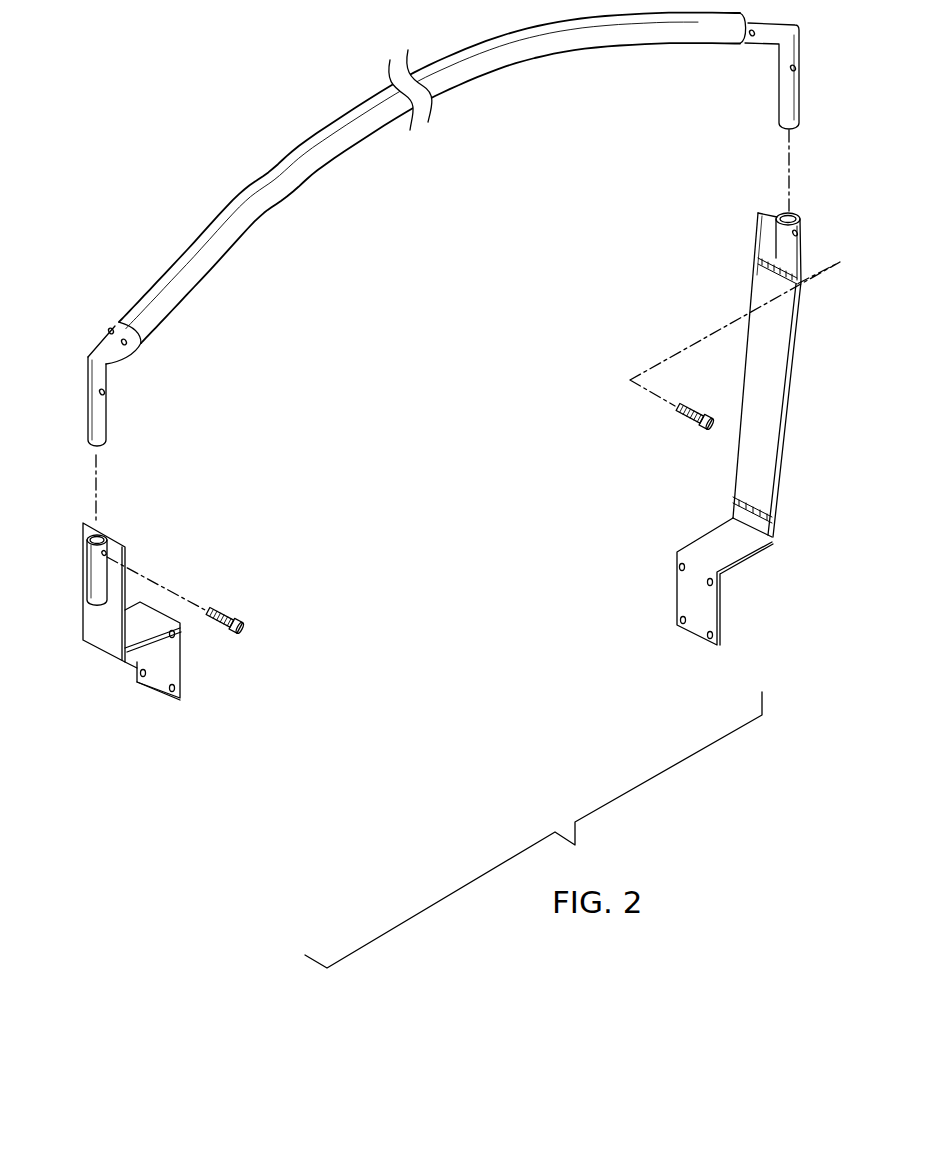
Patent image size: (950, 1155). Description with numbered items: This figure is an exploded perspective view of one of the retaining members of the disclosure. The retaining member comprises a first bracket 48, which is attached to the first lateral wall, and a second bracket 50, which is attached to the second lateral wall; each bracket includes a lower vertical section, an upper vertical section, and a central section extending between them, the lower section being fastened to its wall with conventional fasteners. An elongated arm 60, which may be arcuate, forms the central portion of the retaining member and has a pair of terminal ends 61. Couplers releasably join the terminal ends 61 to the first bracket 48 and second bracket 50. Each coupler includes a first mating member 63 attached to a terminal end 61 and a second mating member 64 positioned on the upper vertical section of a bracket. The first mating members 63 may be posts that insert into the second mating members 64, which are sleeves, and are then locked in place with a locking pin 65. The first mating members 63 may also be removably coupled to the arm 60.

The first bracket 48 is at (775, 540).
The second bracket 50 is at (117, 663).
The elongated arm 60 is at (193, 261).
The terminal ends 61 is at (128, 314).
The first mating member 63 is at (103, 380).
The second mating member 64 is at (92, 577).
The locking pin 65 is at (231, 615).